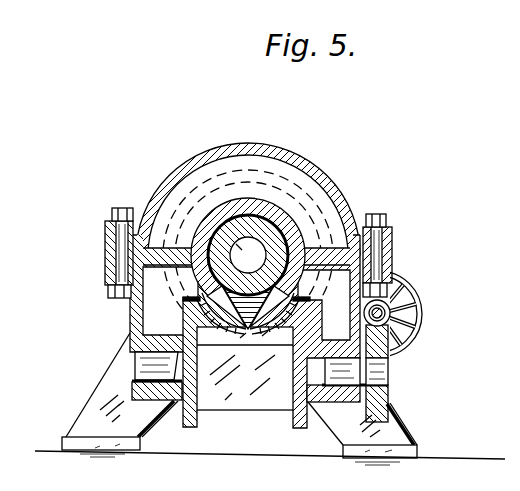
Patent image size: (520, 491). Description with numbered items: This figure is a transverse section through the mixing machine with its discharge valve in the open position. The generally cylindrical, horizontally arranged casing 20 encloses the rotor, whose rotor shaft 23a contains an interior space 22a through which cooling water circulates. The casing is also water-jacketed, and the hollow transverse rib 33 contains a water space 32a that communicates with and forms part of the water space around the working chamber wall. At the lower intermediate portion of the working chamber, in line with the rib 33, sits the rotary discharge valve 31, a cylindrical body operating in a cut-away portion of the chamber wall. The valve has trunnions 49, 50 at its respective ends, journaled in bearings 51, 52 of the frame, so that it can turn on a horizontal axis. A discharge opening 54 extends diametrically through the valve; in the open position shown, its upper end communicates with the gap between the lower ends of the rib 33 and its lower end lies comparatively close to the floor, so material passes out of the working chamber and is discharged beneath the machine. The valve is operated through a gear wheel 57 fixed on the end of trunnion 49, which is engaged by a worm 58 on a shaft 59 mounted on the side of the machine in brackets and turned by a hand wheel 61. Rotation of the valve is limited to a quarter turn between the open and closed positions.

The casing 20 is at (292, 151).
The interior space 22a is at (233, 248).
The rotor shaft 23a is at (246, 235).
The rotary discharge valve 31 is at (193, 405).
The water space 32a is at (328, 202).
The rib 33 is at (298, 293).
The trunnion 49 is at (366, 368).
The trunnion 50 is at (143, 365).
The bearing 51 is at (330, 403).
The bearing 52 is at (133, 391).
The discharge opening 54 is at (253, 402).
The gear wheel 57 is at (389, 393).
The worm 58 is at (391, 315).
The shaft 59 is at (392, 300).
The hand wheel 61 is at (424, 325).